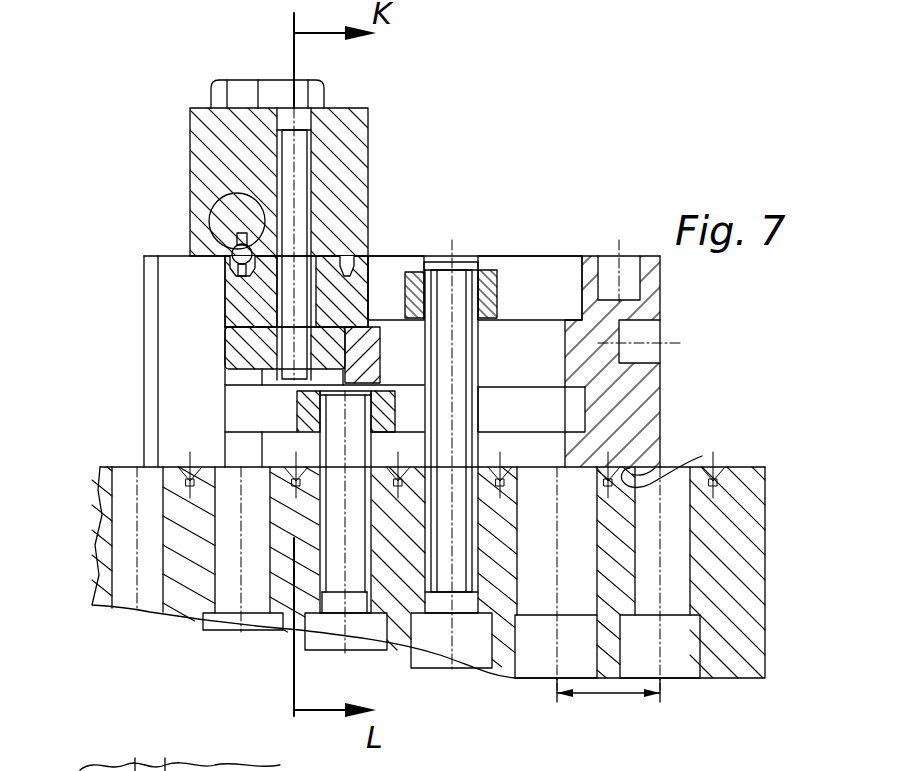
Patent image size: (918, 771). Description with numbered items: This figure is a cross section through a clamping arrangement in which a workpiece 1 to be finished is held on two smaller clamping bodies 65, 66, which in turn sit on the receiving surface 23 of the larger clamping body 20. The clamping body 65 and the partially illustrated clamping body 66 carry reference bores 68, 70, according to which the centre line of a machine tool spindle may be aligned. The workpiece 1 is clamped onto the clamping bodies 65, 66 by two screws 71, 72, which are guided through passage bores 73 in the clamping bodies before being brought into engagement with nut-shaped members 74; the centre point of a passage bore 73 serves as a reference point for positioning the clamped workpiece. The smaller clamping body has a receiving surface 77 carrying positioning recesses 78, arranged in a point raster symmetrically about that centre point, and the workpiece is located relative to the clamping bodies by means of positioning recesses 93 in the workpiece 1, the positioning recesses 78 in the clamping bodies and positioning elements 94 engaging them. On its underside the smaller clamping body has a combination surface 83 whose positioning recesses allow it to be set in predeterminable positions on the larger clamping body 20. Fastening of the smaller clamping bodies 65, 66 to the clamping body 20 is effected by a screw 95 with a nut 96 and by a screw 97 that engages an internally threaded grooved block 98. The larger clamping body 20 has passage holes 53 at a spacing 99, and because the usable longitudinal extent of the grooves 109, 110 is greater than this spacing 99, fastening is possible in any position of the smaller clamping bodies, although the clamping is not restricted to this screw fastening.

The workpiece 1 is at (207, 160).
The clamping body 20 is at (748, 563).
The receiving surface 23 is at (746, 468).
The passage holes 53 is at (545, 593).
The clamping body 65 is at (640, 420).
The clamping body 66 is at (183, 345).
The reference bore 68 is at (640, 330).
The reference bore 70 is at (628, 285).
The screw 71 is at (302, 143).
The screw 72 is at (237, 92).
The passage bore 73 is at (275, 296).
The nut-shaped member 74 is at (235, 347).
The receiving surface 77 is at (388, 288).
The positioning recess 78 is at (346, 263).
The combination surface 83 is at (702, 456).
The positioning recess 93 is at (223, 190).
The positioning element 94 is at (232, 247).
The screw 95 is at (455, 360).
The nut 96 is at (486, 268).
The screw 97 is at (355, 577).
The grooved block 98 is at (307, 413).
The spacing 99 is at (612, 694).
The groove 109 is at (522, 280).
The groove 110 is at (563, 405).